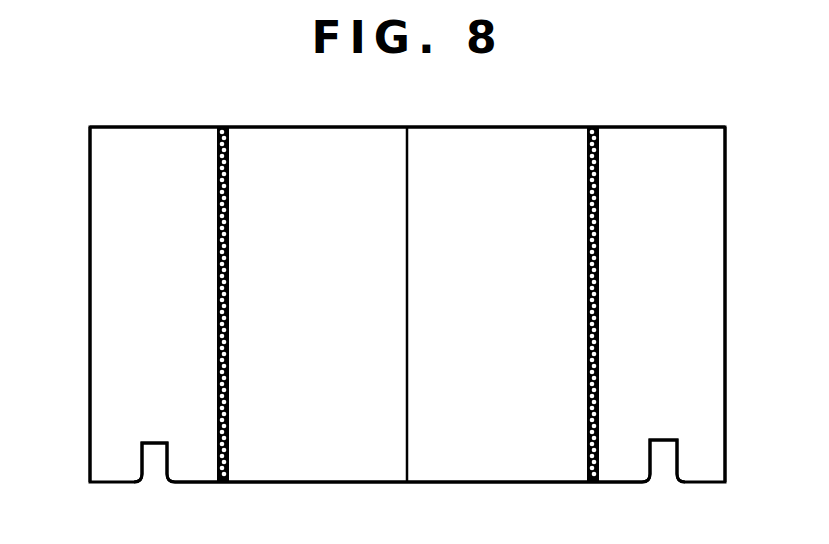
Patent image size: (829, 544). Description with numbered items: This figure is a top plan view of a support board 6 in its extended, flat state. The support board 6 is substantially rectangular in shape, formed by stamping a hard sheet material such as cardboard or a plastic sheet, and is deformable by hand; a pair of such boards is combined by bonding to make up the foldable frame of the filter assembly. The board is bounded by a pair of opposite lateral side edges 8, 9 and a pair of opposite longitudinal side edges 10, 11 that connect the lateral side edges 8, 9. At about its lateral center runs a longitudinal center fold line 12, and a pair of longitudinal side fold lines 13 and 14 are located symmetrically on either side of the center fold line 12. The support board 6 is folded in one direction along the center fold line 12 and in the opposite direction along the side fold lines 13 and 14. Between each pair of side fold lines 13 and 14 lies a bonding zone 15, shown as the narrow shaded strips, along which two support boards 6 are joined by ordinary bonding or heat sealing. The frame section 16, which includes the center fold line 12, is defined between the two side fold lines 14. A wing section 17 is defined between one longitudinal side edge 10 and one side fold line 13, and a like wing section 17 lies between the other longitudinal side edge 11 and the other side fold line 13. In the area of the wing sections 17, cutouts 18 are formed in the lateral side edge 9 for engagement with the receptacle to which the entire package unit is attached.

The support board 6 is at (738, 202).
The lateral side edge 8 is at (347, 126).
The lateral side edge 9 is at (328, 483).
The longitudinal side edge 10 is at (89, 250).
The longitudinal side edge 11 is at (727, 259).
The longitudinal center fold line 12 is at (409, 184).
The longitudinal side fold line 13 is at (217, 209).
The longitudinal side fold line 14 is at (229, 160).
The bonding zone 15 is at (217, 171).
The frame section 16 is at (500, 432).
The wing section 17 is at (125, 344).
The cutout 18 is at (155, 460).